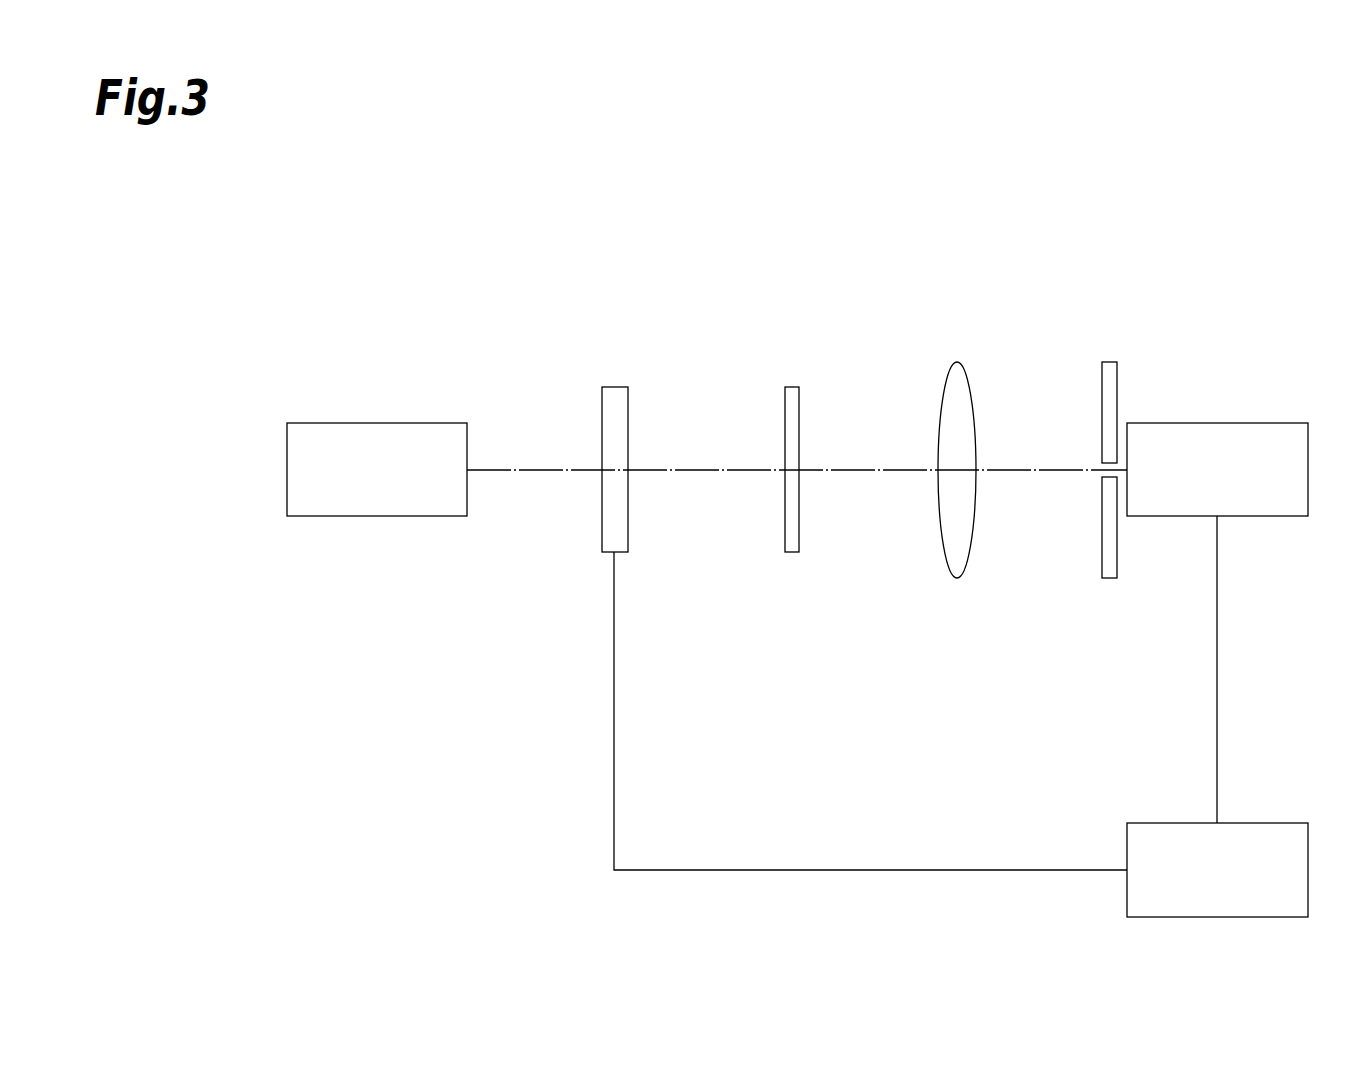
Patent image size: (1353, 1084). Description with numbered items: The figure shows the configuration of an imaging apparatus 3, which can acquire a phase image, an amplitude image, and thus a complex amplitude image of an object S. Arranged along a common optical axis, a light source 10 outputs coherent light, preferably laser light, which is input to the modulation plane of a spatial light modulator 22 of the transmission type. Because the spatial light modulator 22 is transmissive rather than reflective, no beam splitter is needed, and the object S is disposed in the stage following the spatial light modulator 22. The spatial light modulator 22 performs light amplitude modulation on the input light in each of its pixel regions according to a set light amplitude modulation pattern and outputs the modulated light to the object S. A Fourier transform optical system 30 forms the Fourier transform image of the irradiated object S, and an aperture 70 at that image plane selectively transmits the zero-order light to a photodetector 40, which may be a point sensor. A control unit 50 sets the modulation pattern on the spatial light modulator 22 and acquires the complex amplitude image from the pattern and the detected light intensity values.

The imaging apparatus 3 is at (868, 257).
The light source 10 is at (383, 422).
The spatial light modulator 22 is at (613, 386).
The object S is at (792, 386).
The Fourier transform optical system 30 is at (957, 361).
The aperture 70 is at (1108, 361).
The photodetector 40 is at (1222, 422).
The control unit 50 is at (1275, 822).